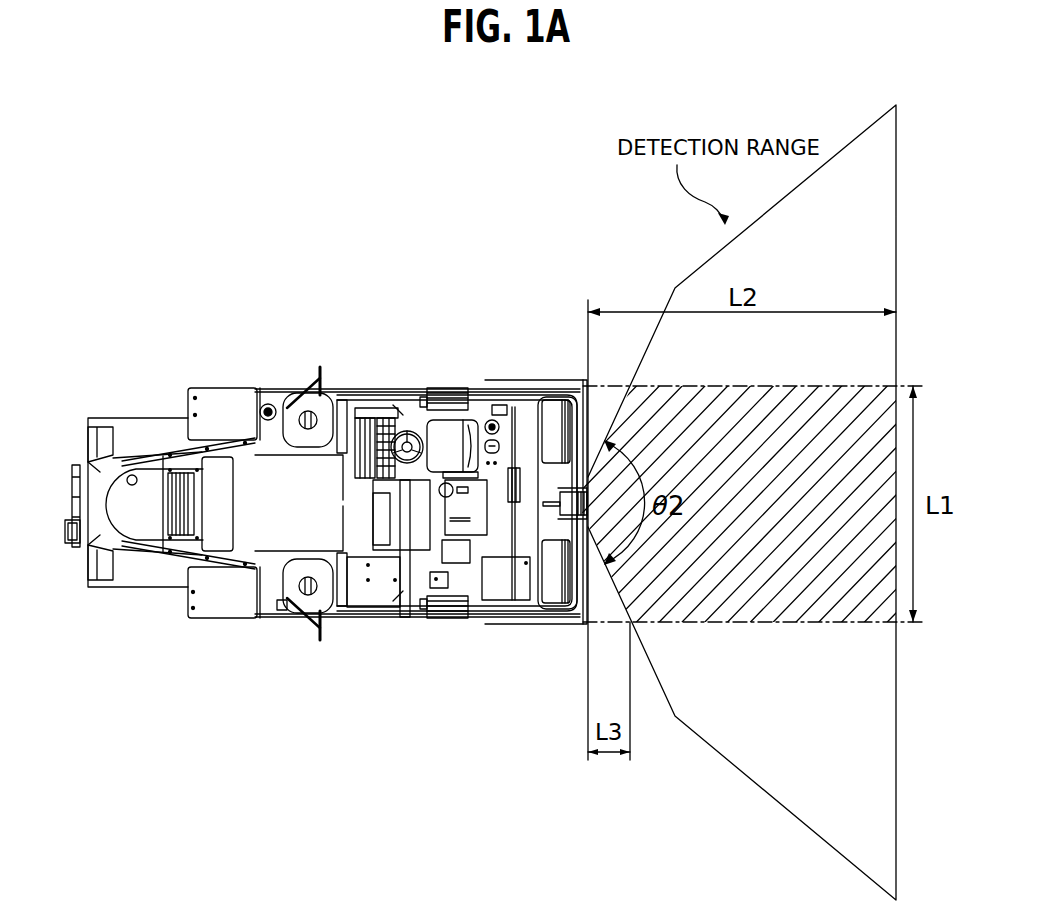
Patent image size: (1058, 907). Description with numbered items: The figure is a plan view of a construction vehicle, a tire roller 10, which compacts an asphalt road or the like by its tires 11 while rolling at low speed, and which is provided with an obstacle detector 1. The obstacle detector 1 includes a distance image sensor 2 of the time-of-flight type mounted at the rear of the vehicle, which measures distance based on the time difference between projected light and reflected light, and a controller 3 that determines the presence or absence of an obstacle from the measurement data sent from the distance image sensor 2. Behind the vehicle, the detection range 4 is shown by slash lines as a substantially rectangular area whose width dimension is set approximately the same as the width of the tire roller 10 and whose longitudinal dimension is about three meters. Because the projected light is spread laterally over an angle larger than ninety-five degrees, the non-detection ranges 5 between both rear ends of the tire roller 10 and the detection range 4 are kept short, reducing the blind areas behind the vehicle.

The obstacle detector 1 is at (559, 476).
The distance image sensor 2 is at (568, 508).
The controller 3 is at (382, 425).
The detection range 4 is at (777, 397).
The non-detection ranges 5 is at (605, 397).
The tire roller 10 is at (249, 377).
The tires 11 is at (142, 428).